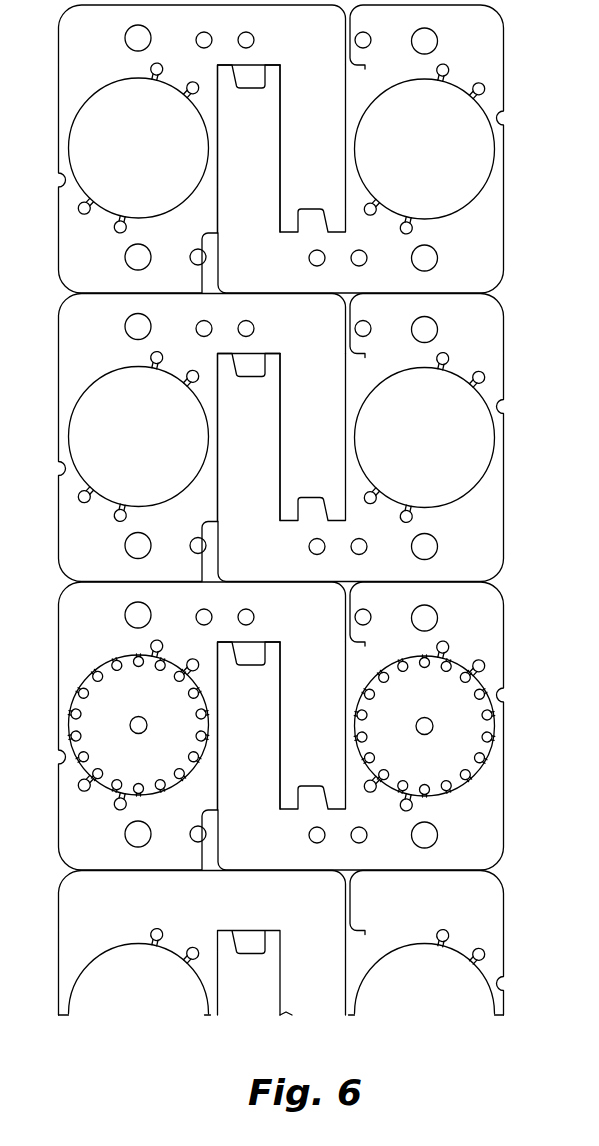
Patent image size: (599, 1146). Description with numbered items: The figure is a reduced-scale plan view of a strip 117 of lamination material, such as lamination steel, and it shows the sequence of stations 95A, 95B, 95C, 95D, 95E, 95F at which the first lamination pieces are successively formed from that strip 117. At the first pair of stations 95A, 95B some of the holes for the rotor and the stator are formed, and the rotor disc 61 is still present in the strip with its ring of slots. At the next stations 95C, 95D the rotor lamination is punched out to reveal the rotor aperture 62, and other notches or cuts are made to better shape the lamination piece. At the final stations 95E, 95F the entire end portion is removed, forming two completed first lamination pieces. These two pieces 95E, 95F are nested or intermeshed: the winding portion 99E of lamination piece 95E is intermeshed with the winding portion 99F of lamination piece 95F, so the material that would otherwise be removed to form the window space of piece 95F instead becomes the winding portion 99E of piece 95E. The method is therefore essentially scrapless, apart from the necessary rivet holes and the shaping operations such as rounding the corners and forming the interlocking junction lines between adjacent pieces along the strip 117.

The first lamination piece forming stage 95A is at (178, 726).
The first lamination piece forming stage 95B is at (393, 726).
The first lamination piece forming stage 95C is at (178, 438).
The first lamination piece forming stage 95D is at (394, 438).
The first lamination piece 95E is at (68, 240).
The first lamination piece 95F is at (498, 234).
The winding portion 99E is at (313, 155).
The winding portion 99F is at (240, 176).
The rotor aperture 62 is at (312, 436).
The rotor disc 61 is at (456, 726).
The strip of lamination material 117 is at (462, 943).